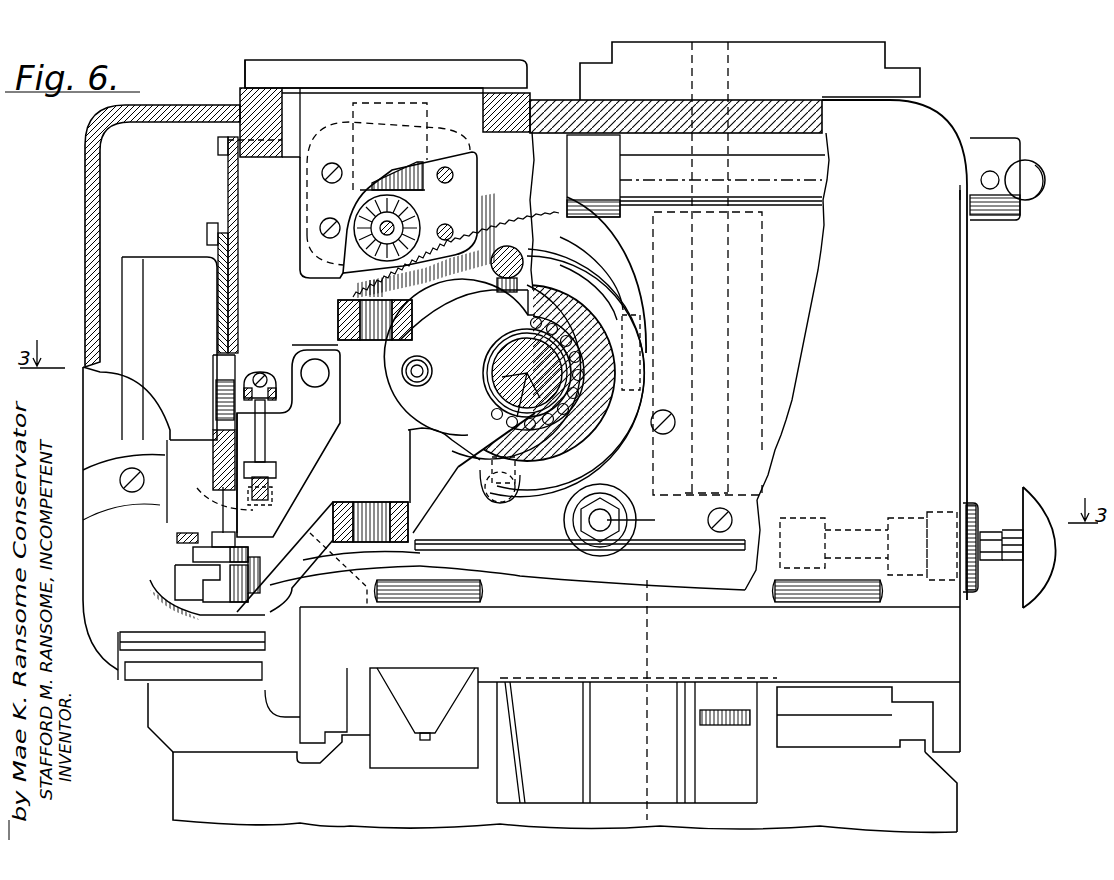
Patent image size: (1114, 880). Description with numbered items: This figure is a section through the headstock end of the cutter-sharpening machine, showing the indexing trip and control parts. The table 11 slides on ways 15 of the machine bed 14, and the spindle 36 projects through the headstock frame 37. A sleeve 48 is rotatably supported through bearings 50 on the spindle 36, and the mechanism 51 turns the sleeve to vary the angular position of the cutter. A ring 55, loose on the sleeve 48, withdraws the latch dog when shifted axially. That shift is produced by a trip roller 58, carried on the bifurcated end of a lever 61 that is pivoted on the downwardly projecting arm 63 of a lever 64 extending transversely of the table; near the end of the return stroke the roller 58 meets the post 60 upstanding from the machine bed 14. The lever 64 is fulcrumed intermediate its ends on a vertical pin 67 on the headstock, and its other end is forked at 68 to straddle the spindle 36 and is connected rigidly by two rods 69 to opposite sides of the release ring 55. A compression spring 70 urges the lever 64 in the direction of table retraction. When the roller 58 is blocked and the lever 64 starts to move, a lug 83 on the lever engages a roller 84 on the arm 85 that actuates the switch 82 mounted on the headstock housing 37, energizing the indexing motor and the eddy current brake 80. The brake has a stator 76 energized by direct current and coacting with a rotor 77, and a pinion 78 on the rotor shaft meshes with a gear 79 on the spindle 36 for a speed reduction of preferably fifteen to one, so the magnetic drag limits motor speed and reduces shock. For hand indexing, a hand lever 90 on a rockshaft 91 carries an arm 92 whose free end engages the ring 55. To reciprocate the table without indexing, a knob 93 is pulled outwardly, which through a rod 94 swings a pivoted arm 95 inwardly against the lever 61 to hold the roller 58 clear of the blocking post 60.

The table 11 is at (942, 668).
The machine bed 14 is at (935, 798).
The ways 15 is at (390, 713).
The spindle 36 is at (505, 360).
The headstock frame 37 is at (945, 313).
The sleeve 48 is at (607, 358).
The bearings 50 is at (615, 437).
The mechanism 51 is at (735, 268).
The ring 55 is at (598, 448).
The trip roller 58 is at (175, 573).
The post 60 is at (185, 592).
The lever 61 is at (193, 555).
The downwardly projecting arm 63 is at (295, 532).
The lever 64 is at (345, 411).
The vertical pin 67 is at (345, 326).
The forked end 68 is at (468, 305).
The rods 69 is at (520, 250).
The compression spring 70 is at (430, 387).
The stator 76 is at (463, 173).
The rotor 77 is at (442, 260).
The pinion 78 is at (360, 212).
The gear 79 is at (518, 208).
The eddy current brake 80 is at (438, 175).
The switch 82 is at (189, 430).
The lug 83 is at (290, 492).
The roller 84 is at (208, 495).
The arm 85 is at (262, 420).
The hand lever 90 is at (1035, 175).
The rockshaft 91 is at (788, 178).
The arm 92 is at (610, 258).
The knob 93 is at (1038, 575).
The rod 94 is at (708, 545).
The pivoted arm 95 is at (177, 537).